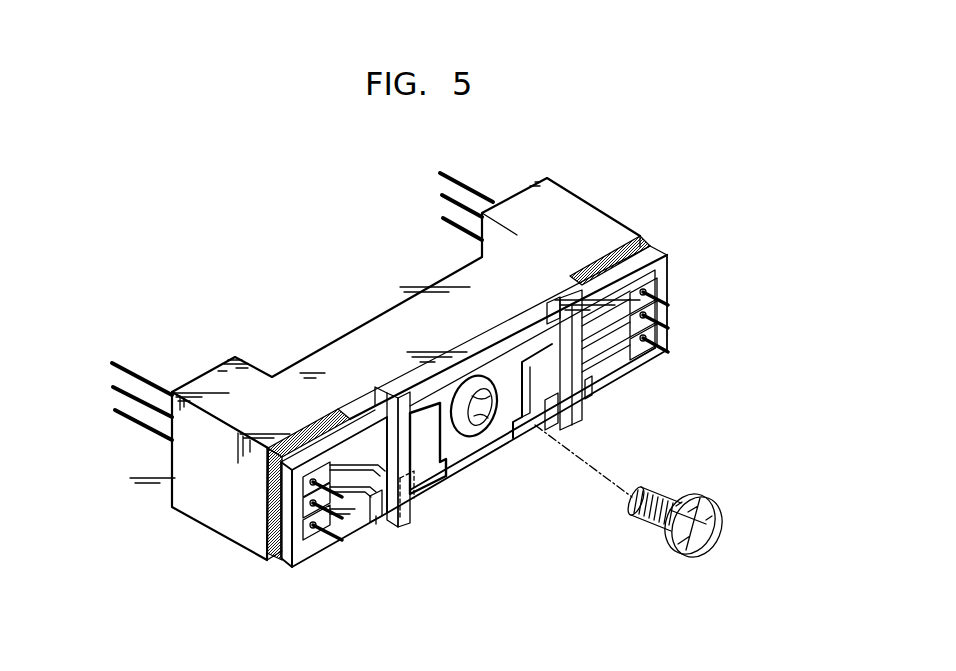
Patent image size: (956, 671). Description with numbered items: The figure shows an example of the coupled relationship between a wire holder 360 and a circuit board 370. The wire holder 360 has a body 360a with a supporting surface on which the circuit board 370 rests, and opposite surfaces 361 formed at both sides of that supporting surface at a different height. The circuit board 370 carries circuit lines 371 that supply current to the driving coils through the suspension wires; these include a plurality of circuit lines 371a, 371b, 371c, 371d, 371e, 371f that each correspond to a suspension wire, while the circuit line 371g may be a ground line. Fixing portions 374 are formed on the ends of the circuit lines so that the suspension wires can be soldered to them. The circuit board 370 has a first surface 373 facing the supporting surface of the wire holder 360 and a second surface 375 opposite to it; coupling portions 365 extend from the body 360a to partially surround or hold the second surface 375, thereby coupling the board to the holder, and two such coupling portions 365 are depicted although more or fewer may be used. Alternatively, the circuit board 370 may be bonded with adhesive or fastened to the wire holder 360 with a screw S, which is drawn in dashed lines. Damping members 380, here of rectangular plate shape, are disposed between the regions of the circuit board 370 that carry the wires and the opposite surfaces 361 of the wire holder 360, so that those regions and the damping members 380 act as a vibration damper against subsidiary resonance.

The wire holder 360 is at (595, 208).
The body of the wire holder 360a is at (532, 205).
The opposite surfaces 361 is at (468, 175).
The coupling portions 365 is at (386, 397).
The circuit board 370 is at (667, 272).
The circuit lines 371 is at (484, 460).
The circuit line 371a is at (377, 520).
The circuit line 371b is at (417, 490).
The circuit line 371c is at (447, 480).
The circuit line 371d is at (523, 432).
The circuit line 371e is at (555, 418).
The circuit line 371f is at (600, 400).
The circuit line (ground line) 371g is at (488, 440).
The first surface of the circuit board 373 is at (262, 563).
The fixing portions 374 is at (650, 338).
The second surface of the circuit board 375 is at (303, 567).
The damping members 380 is at (414, 408).
The screw S is at (687, 566).